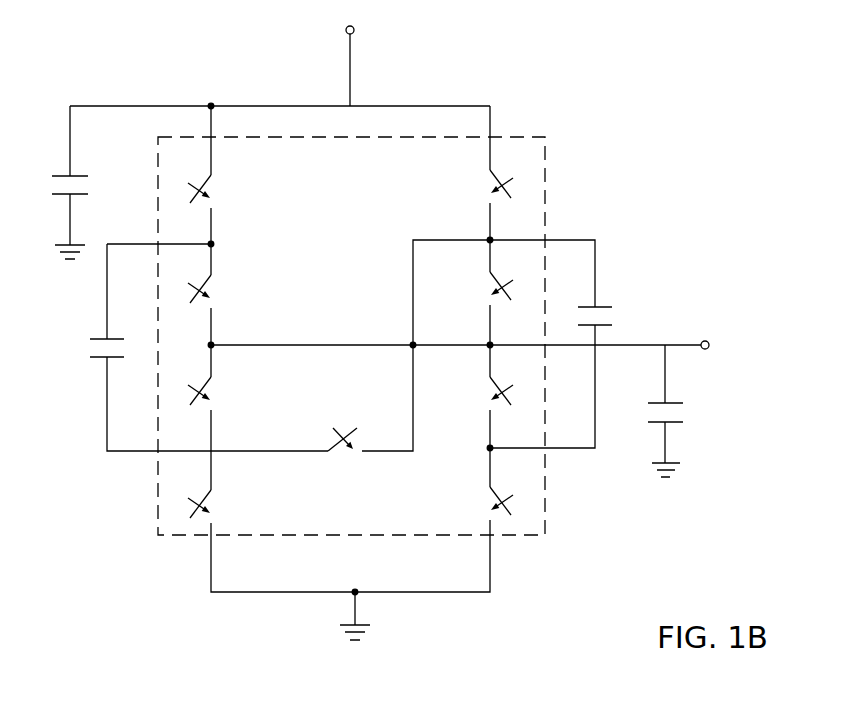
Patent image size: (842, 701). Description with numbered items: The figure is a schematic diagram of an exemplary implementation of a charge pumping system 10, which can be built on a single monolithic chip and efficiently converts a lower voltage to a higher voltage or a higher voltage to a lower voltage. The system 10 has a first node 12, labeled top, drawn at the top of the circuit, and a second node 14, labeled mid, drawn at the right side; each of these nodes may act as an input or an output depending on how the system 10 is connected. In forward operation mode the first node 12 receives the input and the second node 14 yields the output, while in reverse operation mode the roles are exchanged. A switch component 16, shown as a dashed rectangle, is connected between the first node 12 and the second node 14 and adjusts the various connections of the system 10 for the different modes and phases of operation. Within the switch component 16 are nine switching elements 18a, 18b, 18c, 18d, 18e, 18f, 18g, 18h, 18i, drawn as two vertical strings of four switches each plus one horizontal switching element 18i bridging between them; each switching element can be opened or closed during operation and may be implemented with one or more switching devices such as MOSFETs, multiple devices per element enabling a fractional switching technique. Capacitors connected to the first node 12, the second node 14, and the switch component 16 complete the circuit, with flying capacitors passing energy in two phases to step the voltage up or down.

The charge pumping system 10 is at (709, 112).
The first node 12 is at (346, 29).
The second node 14 is at (705, 341).
The switch component 16 is at (546, 160).
The switching element 18a is at (222, 190).
The switching element 18b is at (222, 291).
The switching element 18c is at (222, 393).
The switching element 18d is at (222, 501).
The switching element 18e is at (478, 186).
The switching element 18f is at (478, 289).
The switching element 18g is at (478, 394).
The switching element 18h is at (478, 499).
The switching element 18i is at (346, 425).